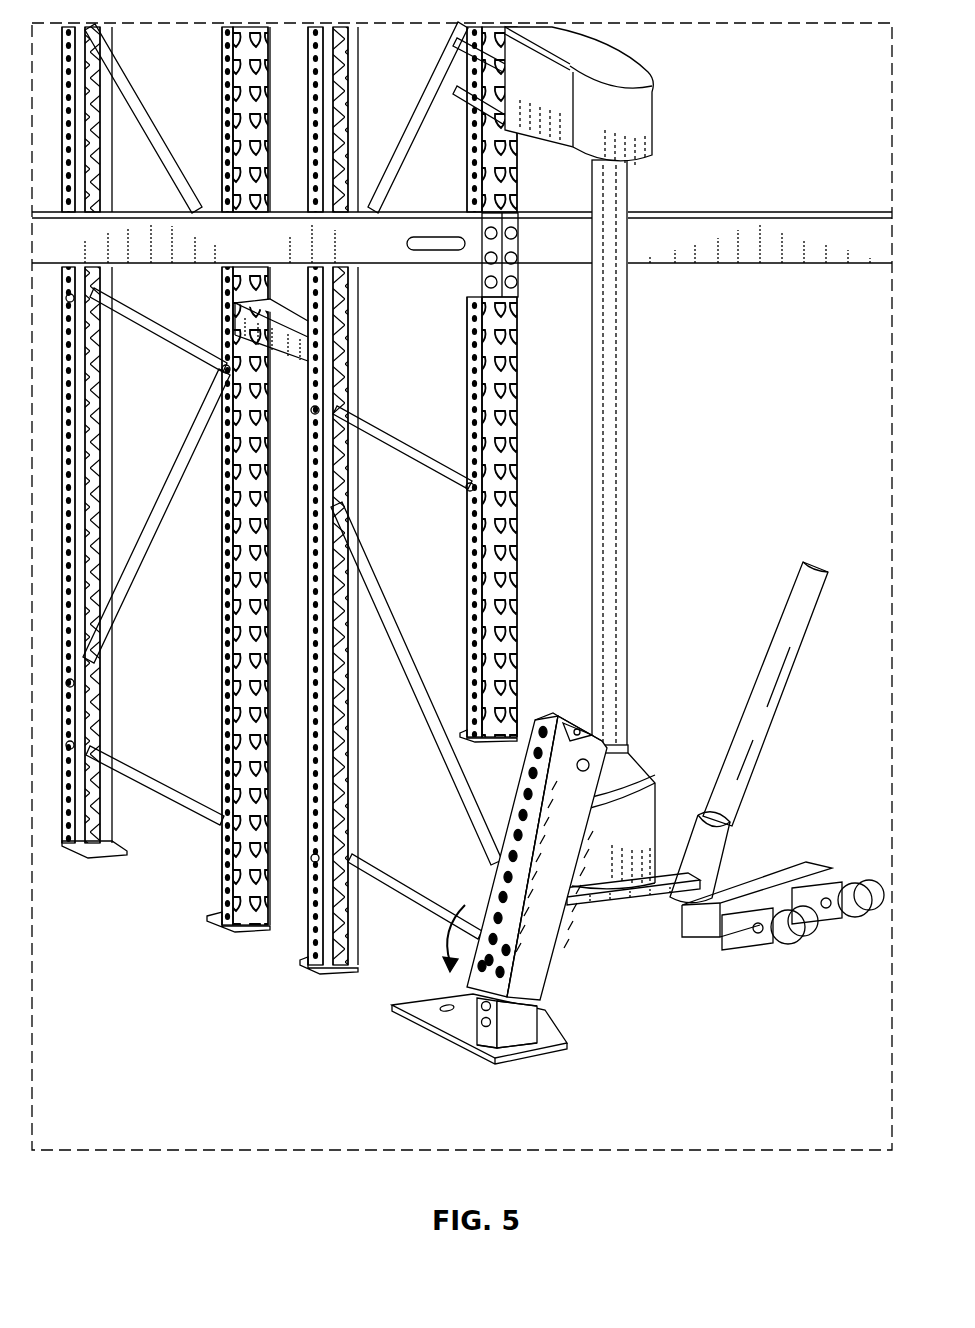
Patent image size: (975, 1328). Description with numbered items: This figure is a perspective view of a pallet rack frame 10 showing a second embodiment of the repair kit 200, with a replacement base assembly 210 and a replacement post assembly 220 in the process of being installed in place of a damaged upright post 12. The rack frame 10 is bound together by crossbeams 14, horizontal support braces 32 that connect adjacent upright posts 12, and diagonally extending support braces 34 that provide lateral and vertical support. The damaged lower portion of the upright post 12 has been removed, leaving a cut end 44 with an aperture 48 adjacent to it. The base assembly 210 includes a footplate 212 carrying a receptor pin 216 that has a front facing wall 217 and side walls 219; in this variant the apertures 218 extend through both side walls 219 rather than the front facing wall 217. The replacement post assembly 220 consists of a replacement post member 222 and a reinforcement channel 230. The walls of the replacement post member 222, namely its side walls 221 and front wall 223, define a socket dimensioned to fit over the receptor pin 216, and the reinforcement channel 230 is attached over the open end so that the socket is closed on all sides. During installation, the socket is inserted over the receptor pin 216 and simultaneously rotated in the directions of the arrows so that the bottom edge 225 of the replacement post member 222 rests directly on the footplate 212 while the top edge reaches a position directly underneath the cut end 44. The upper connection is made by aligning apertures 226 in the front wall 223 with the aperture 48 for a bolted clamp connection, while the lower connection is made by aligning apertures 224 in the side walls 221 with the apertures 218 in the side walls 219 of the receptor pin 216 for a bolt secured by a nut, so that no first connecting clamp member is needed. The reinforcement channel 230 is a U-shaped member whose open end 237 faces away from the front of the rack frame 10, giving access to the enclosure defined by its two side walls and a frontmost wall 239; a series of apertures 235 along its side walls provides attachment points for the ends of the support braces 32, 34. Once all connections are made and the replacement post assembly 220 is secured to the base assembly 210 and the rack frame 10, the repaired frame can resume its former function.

The rack frame 10 is at (525, 402).
The upright post 12 is at (360, 342).
The crossbeam 14 is at (858, 252).
The horizontal support brace 32 is at (398, 905).
The diagonally extending support brace 34 is at (383, 610).
The cut end 44 is at (468, 740).
The aperture 48 is at (500, 685).
The repair kit 200 is at (621, 853).
The base assembly 210 is at (506, 1050).
The footplate 212 is at (405, 1007).
The receptor pin 216 is at (545, 1026).
The front facing wall 217 is at (536, 1012).
The apertures 218 is at (485, 1003).
The side walls 219 is at (493, 1038).
The replacement post assembly 220 is at (549, 697).
The side walls 221 is at (568, 694).
The replacement post member 222 is at (607, 858).
The front wall 223 is at (578, 812).
The apertures 224 is at (487, 960).
The bottom edge 225 is at (510, 1002).
The apertures 226 is at (592, 763).
The reinforcement channel 230 is at (472, 856).
The apertures 235 is at (500, 881).
The open end 237 is at (553, 718).
The frontmost wall 239 is at (513, 718).